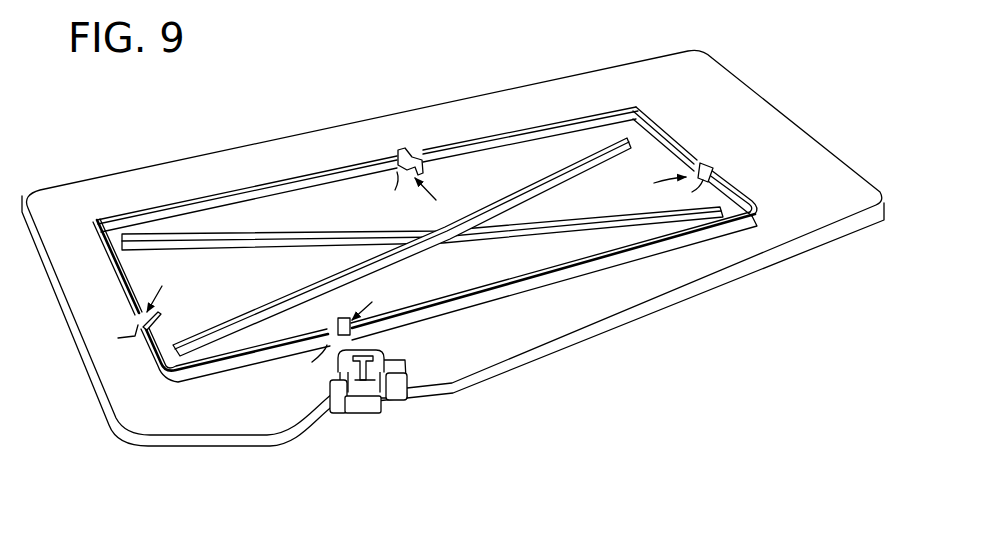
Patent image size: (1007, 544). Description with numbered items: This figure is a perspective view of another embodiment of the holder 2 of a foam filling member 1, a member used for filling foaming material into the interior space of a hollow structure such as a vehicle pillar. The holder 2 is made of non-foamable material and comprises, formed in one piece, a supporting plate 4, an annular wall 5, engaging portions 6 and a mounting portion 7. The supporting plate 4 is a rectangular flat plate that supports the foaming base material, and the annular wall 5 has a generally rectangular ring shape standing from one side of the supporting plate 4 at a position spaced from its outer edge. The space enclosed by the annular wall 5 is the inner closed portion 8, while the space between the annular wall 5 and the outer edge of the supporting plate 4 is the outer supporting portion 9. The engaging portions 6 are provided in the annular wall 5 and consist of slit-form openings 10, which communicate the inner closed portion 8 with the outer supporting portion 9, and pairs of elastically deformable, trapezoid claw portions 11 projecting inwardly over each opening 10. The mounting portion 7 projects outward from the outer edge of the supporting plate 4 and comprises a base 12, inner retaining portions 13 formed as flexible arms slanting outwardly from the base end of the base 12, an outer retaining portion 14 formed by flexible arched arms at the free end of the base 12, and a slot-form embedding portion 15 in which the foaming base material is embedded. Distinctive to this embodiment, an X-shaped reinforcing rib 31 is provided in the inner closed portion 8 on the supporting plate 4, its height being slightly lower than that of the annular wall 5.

The foam filling member 1 is at (443, 520).
The holder 2 is at (650, 336).
The supporting plate 4 is at (772, 91).
The annular wall 5 is at (256, 186).
The engaging portions 6 is at (416, 243).
The mounting portion 7 is at (375, 406).
The inner closed portion 8 is at (513, 172).
The outer supporting portion 9 is at (473, 90).
The openings 10 is at (397, 282).
The claw portions 11 is at (397, 150).
The base 12 is at (372, 352).
The inner retaining portions 13 is at (332, 408).
The outer retaining portion 14 is at (375, 412).
The embedding portion 15 is at (398, 366).
The reinforcing rib 31 is at (190, 232).